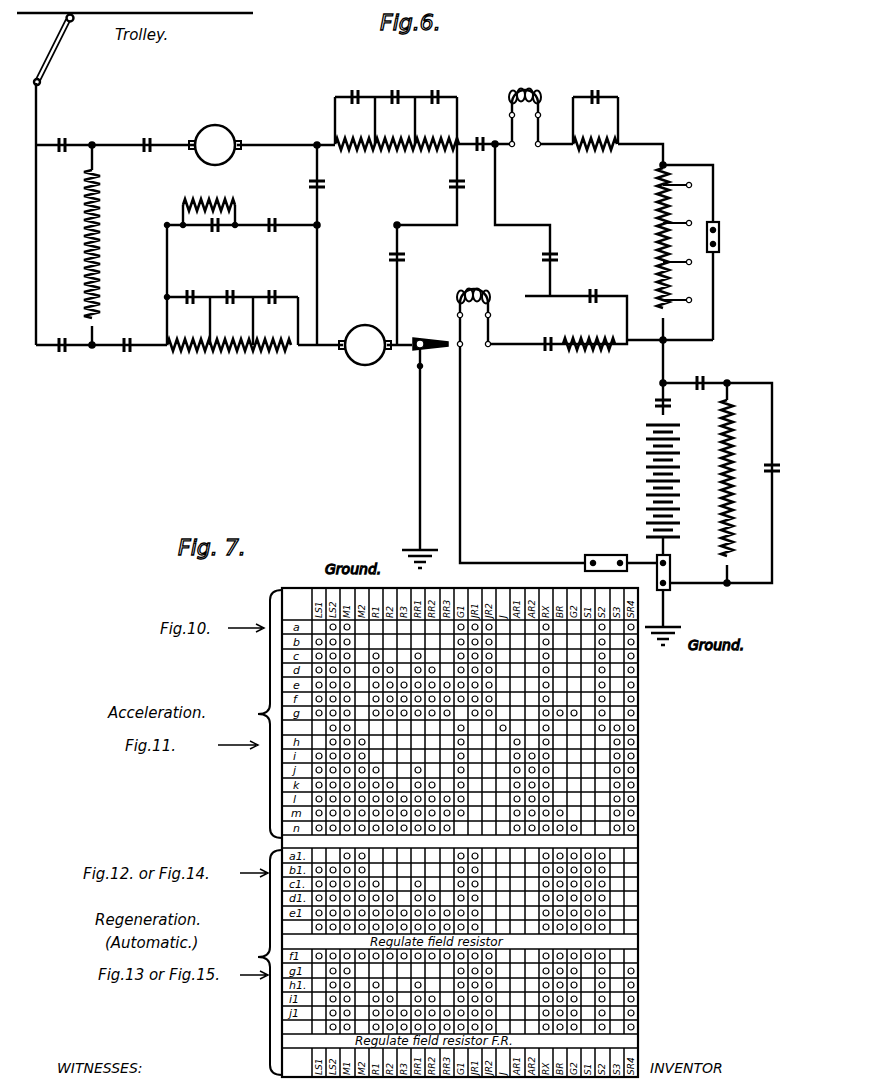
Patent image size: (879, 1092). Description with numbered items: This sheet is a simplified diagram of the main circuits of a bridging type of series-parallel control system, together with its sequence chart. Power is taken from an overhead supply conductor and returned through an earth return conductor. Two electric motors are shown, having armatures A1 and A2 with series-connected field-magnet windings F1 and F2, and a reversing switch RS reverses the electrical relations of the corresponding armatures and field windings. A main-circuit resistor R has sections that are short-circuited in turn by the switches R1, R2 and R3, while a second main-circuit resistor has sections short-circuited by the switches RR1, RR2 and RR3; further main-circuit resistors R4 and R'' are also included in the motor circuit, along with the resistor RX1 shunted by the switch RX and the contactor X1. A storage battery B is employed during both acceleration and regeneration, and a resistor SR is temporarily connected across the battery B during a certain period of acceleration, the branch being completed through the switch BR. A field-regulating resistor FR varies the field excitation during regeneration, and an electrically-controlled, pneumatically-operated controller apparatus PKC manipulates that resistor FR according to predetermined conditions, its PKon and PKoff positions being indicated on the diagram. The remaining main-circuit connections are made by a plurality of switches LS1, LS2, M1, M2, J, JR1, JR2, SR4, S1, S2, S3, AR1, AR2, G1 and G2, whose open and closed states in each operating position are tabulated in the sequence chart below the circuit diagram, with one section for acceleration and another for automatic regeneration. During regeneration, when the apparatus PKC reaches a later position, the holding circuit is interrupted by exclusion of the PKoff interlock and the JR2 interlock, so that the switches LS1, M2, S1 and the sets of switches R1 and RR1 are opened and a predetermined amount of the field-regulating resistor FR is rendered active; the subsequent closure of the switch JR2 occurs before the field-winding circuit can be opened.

The main-circuit switch LS1 is at (65, 136).
The main-circuit switch LS2 is at (59, 357).
The main-circuit switch M1 is at (147, 136).
The main-circuit switch M2 is at (129, 336).
The armature A1 is at (215, 145).
The armature A2 is at (365, 345).
The main-circuit resistor R is at (397, 132).
The resistor switch R1 is at (267, 224).
The resistor switch R2 is at (396, 88).
The resistor switch R3 is at (436, 88).
The main-circuit resistor R4 is at (208, 202).
The resistor switch RR1 is at (231, 283).
The resistor switch RR2 is at (234, 289).
The resistor switch RR3 is at (278, 289).
The main-circuit switch J is at (324, 184).
The main-circuit switch JR1 is at (437, 185).
The main-circuit switch JR2 is at (270, 216).
The main-circuit switch SR4 is at (207, 235).
The main-circuit switch S1 is at (407, 257).
The main-circuit switch S2 is at (562, 258).
The main-circuit switch S3 is at (481, 134).
The field-magnet winding F1 is at (525, 106).
The field-magnet winding F2 is at (474, 309).
The reversing switch RS is at (503, 256).
The switch RX is at (595, 106).
The resistor RX1 is at (595, 154).
The field-regulating resistor FR is at (656, 238).
The contactor X1 is at (728, 237).
The main-circuit switch AR1 is at (549, 352).
The main-circuit switch AR2 is at (592, 289).
The main-circuit resistor R'' is at (589, 351).
The controller apparatus PKC is at (557, 345).
The switch BR is at (702, 374).
The main-circuit switch G1 is at (643, 408).
The main-circuit switch G2 is at (764, 459).
The storage battery B is at (649, 490).
The resistor SR is at (718, 458).
The PK on switch PKon is at (607, 553).
The PK-off interlock PKoff is at (686, 591).